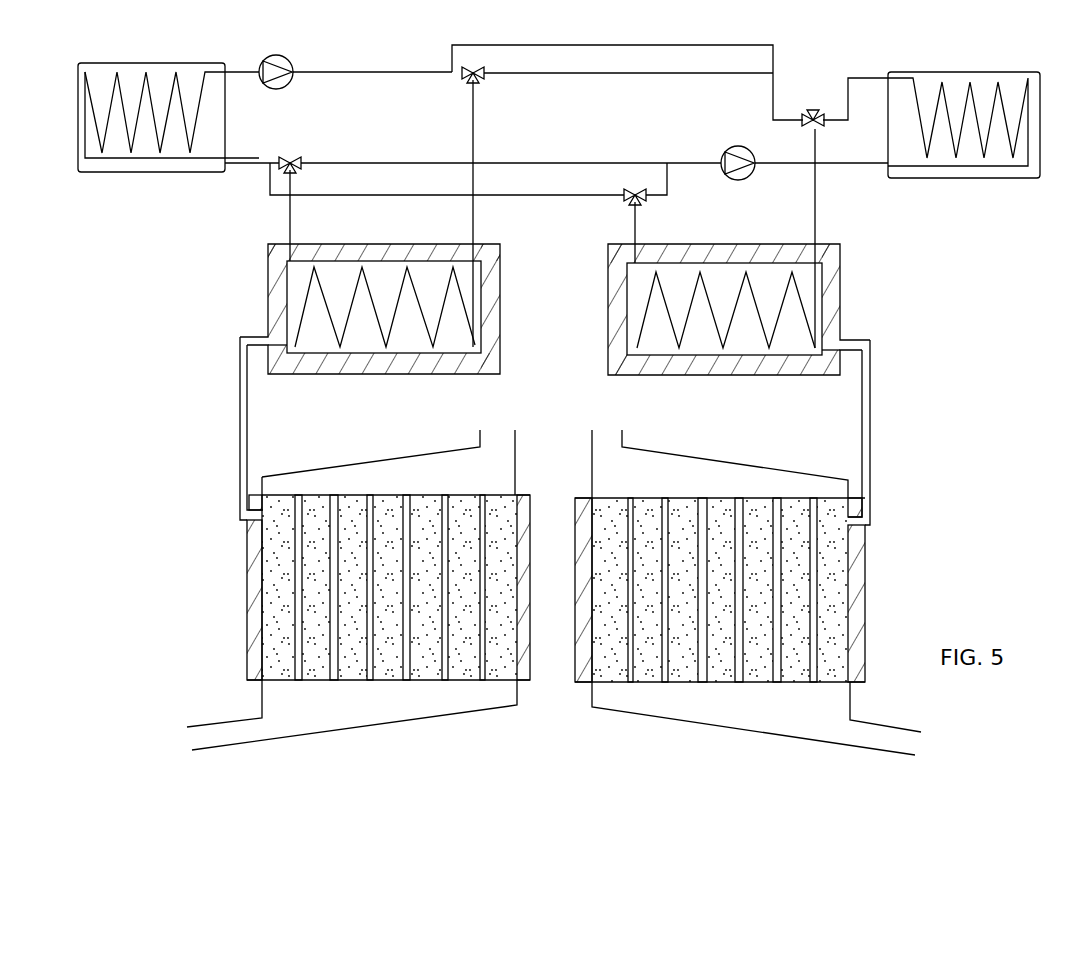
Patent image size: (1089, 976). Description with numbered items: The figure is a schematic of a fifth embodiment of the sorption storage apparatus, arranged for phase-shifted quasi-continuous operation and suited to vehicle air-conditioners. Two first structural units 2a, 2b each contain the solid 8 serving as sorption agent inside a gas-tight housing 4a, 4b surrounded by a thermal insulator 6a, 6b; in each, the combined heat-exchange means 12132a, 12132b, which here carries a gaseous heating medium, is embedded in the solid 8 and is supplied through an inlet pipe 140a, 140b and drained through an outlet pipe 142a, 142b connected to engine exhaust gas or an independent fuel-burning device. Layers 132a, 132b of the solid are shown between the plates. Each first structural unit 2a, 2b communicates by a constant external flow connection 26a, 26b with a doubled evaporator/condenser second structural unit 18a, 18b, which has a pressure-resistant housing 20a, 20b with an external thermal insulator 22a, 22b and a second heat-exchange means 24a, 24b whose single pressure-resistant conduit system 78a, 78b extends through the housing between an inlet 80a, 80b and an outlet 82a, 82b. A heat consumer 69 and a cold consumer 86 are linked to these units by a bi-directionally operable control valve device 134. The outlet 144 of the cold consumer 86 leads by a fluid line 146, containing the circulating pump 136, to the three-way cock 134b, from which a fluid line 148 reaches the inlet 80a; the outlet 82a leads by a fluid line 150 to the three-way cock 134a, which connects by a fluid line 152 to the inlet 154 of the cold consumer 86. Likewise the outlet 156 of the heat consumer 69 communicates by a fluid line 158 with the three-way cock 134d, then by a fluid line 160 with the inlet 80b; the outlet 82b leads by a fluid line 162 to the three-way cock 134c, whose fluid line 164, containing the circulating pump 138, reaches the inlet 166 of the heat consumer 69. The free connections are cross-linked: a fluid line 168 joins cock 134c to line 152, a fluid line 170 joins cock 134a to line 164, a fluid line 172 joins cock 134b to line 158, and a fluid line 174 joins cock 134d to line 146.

The first structural unit 2a is at (234, 527).
The first structural unit 2b is at (886, 538).
The gas-tight housing 4a is at (250, 563).
The gas-tight housing 4b is at (862, 570).
The thermal insulator 6a is at (249, 550).
The thermal insulator 6b is at (867, 580).
The solid 8 is at (277, 663).
The first catalyst bed 132a is at (389, 587).
The second catalyst bed 132b is at (818, 612).
The first catalyst bed layers 12132a is at (332, 578).
The second catalyst bed layers 12132b is at (784, 590).
The second structural unit 18a is at (303, 380).
The second structural unit 18b is at (666, 381).
The pressure-resistant housing 20a is at (274, 275).
The pressure-resistant housing 20b is at (834, 273).
The external thermal insulator 22a is at (274, 302).
The external thermal insulator 22b is at (836, 293).
The second heat-exchange means 24a is at (466, 283).
The second heat-exchange means 24b is at (645, 285).
The flow connection 26a is at (240, 456).
The flow connection 26b is at (872, 456).
The heat consumer 69 is at (1000, 182).
The pressure-resistant conduit system 78a is at (480, 338).
The pressure-resistant conduit system 78b is at (637, 335).
The inlet 80a is at (493, 247).
The inlet 80b is at (835, 244).
The outlet 82a is at (321, 244).
The outlet 82b is at (657, 251).
The cold consumer 86 is at (116, 178).
The control valve device 134 is at (672, 126).
The three-way cock 134a is at (294, 158).
The three-way cock 134b is at (480, 66).
The three-way cock 134c is at (631, 188).
The three-way cock 134d is at (816, 105).
The circulating pump 136 is at (290, 83).
The circulating pump 138 is at (738, 184).
The inlet pipe 140a is at (405, 708).
The inlet pipe 140b is at (707, 710).
The outlet pipe 142a is at (418, 470).
The outlet pipe 142b is at (690, 473).
The outlet 144 is at (238, 72).
The fluid line 146 is at (245, 77).
The fluid line 148 is at (477, 126).
The fluid line 150 is at (290, 219).
The fluid line 152 is at (251, 164).
The inlet 154 is at (223, 180).
The outlet 156 is at (888, 74).
The fluid line 158 is at (855, 82).
The fluid line 160 is at (817, 187).
The fluid line 162 is at (633, 227).
The fluid line 164 is at (843, 164).
The inlet 166 is at (884, 170).
The fluid line 168 is at (340, 195).
The fluid line 170 is at (395, 163).
The fluid line 172 is at (702, 79).
The fluid line 174 is at (637, 45).